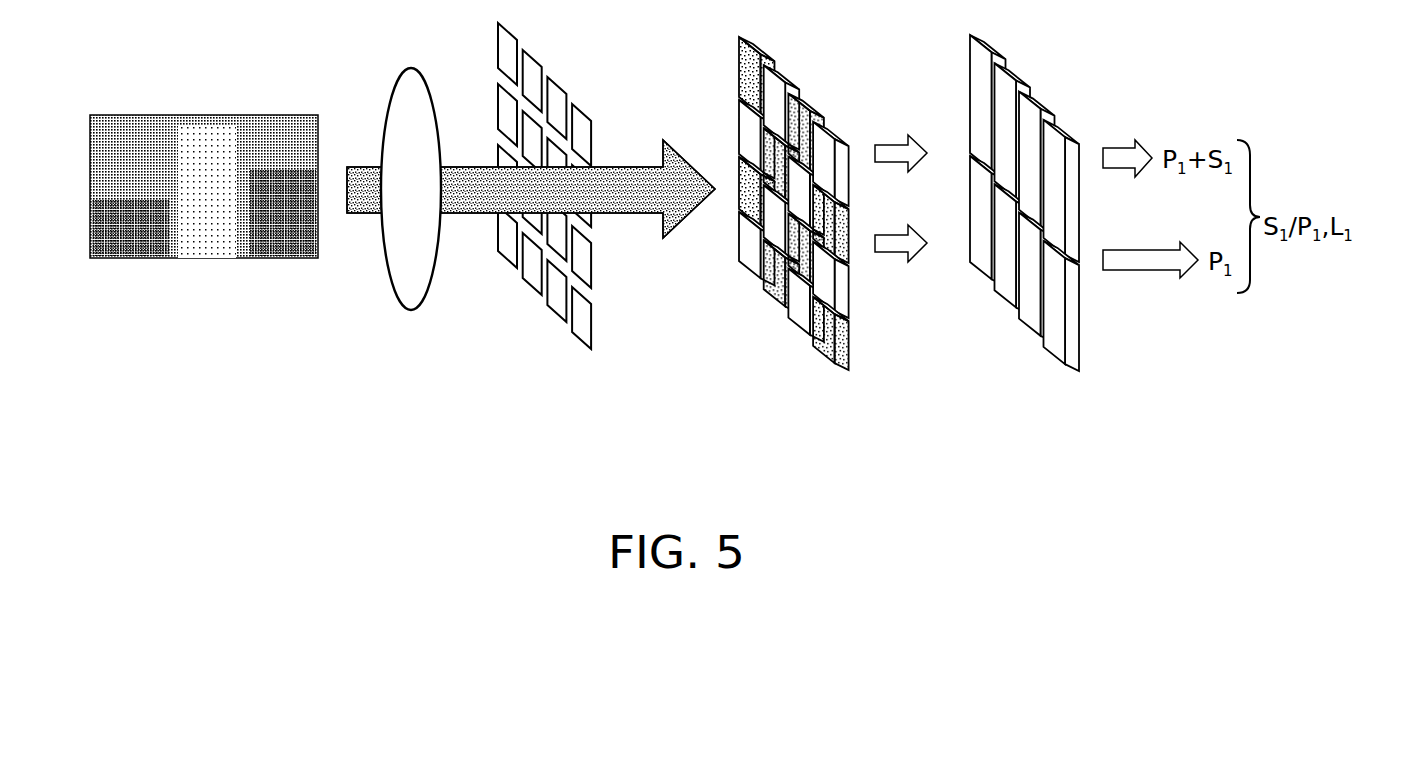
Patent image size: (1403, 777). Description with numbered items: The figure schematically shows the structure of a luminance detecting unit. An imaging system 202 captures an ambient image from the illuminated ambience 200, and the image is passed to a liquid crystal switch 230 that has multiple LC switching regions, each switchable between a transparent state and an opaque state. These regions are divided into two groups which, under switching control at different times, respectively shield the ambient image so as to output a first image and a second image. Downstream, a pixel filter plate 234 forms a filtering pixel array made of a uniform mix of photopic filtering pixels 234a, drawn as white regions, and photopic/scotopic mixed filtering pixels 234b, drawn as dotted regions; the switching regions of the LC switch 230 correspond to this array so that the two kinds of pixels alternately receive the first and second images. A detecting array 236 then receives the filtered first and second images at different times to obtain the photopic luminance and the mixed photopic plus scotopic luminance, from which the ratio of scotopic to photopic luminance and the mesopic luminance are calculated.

The illuminated ambience 200 is at (262, 117).
The imaging system 202 is at (425, 272).
The liquid crystal switch 230 is at (587, 322).
The pixel filter plate 234 is at (783, 236).
The photopic filtering pixels 234a is at (726, 268).
The photopic/scotopic mixed filtering pixels 234b is at (755, 308).
The detecting array 236 is at (1077, 348).